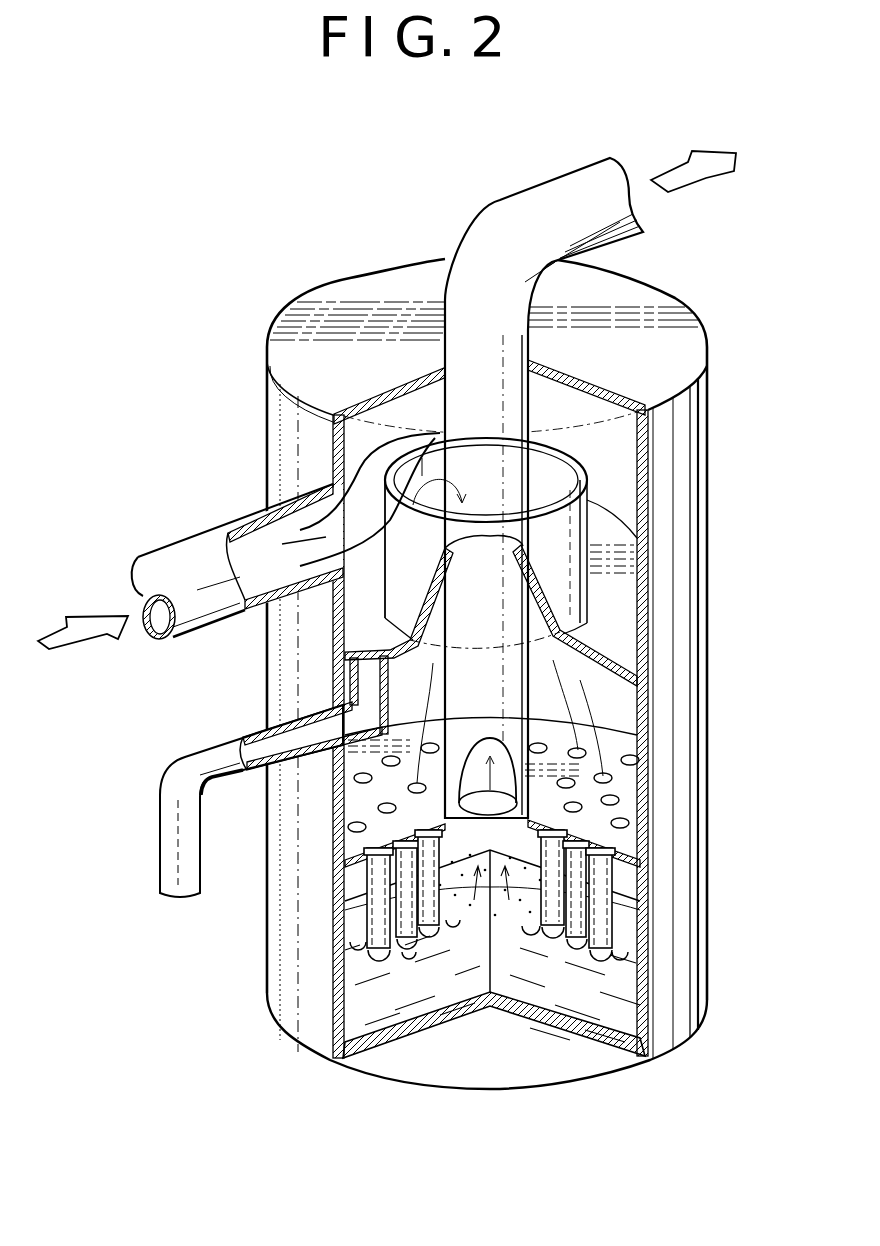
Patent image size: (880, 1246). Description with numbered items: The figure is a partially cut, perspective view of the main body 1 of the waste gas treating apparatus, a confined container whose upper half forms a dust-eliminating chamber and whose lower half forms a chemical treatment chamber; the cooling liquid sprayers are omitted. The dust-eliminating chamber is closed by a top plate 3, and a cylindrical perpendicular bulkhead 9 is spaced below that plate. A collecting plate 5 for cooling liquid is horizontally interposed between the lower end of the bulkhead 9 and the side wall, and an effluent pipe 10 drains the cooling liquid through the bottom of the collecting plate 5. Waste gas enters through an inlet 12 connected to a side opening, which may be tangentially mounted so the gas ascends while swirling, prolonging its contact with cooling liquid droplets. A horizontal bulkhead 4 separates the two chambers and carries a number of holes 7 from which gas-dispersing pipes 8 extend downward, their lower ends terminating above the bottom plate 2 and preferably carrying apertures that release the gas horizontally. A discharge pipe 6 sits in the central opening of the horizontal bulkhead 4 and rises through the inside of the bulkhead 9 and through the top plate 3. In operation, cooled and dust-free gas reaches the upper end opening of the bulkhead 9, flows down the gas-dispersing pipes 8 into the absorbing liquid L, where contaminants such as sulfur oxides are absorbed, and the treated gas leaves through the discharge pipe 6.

The main body 1 is at (267, 405).
The bottom plate 2 is at (432, 1022).
The top plate 3 is at (640, 303).
The horizontal bulkhead 4 is at (603, 811).
The collecting plate 5 is at (613, 618).
The discharge pipe 6 is at (537, 684).
The holes 7 is at (614, 767).
The gas-dispersing pipes 8 is at (603, 931).
The cylindrical perpendicular bulkhead 9 is at (590, 505).
The effluent pipe 10 is at (185, 762).
The inlet 12 is at (182, 558).
The absorbing liquid L is at (566, 982).